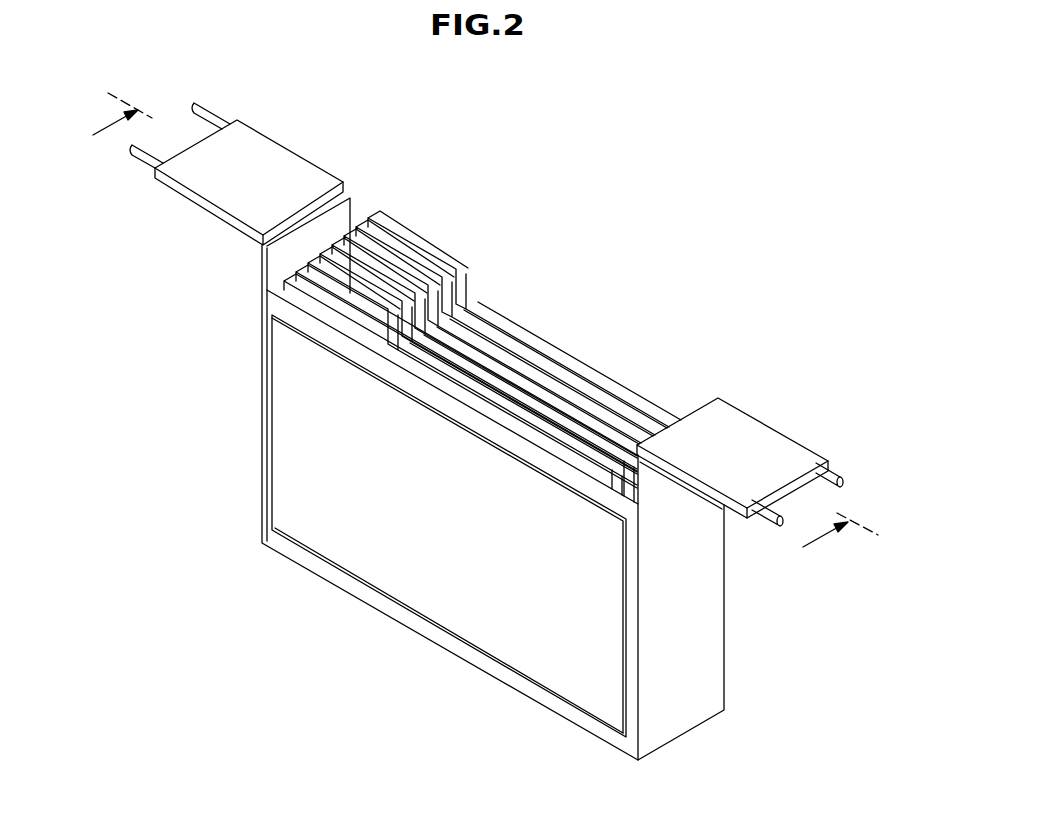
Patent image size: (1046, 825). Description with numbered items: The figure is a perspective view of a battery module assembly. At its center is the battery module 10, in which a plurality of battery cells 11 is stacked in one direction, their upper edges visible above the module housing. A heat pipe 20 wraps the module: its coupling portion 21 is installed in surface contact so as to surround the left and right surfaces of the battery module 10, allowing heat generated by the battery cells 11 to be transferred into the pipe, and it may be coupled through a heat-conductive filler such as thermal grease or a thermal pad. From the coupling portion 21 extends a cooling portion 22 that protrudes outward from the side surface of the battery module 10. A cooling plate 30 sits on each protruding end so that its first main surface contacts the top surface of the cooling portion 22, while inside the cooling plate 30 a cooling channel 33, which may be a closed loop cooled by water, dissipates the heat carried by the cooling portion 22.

The battery module 10 is at (558, 345).
The battery cells 11 is at (522, 343).
The heat pipe 20 is at (797, 585).
The coupling portion 21 is at (703, 654).
The cooling portion 22 is at (698, 493).
The cooling plate 30 is at (783, 427).
The cooling channel 33 is at (840, 473).